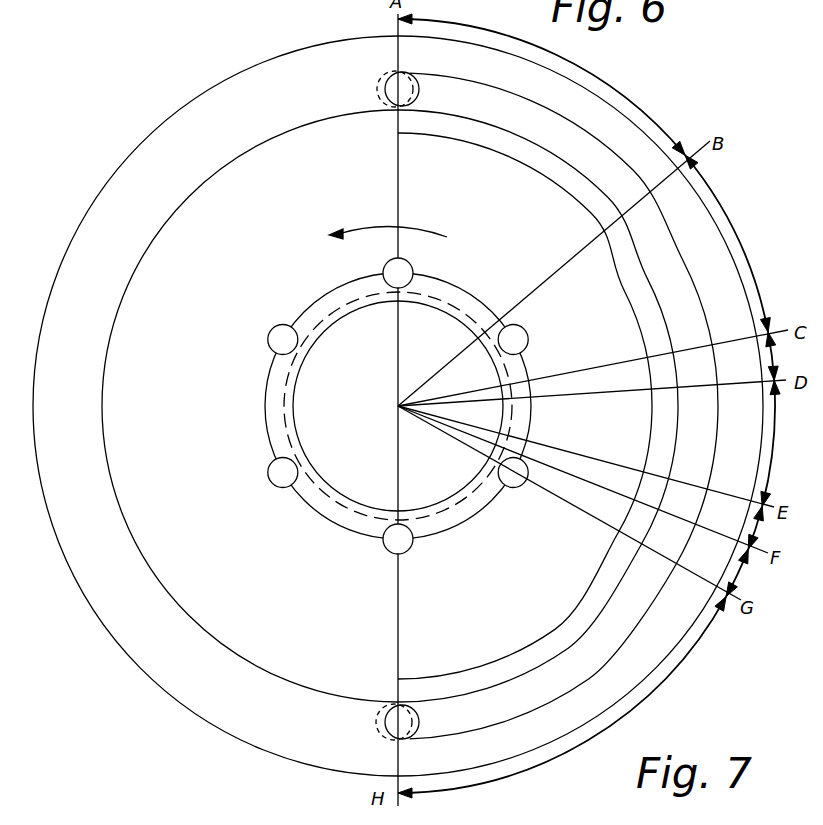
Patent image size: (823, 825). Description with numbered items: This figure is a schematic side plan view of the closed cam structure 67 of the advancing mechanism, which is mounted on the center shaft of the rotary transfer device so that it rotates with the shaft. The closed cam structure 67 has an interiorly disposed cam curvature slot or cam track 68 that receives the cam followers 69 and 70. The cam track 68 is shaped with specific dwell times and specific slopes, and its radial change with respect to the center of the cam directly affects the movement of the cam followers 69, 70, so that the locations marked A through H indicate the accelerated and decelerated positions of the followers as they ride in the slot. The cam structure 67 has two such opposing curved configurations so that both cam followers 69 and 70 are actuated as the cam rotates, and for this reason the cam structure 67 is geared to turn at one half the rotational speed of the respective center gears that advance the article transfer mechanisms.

The closed cam structure 67 is at (178, 108).
The cam track slot 68 is at (422, 80).
The cam follower 69 is at (413, 731).
The cam follower 70 is at (418, 94).